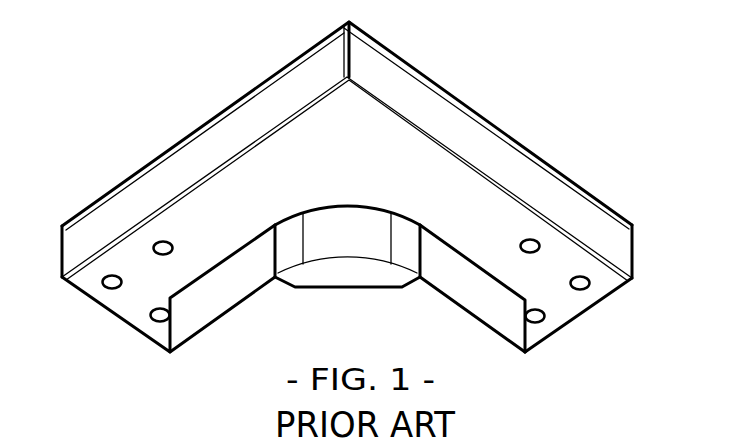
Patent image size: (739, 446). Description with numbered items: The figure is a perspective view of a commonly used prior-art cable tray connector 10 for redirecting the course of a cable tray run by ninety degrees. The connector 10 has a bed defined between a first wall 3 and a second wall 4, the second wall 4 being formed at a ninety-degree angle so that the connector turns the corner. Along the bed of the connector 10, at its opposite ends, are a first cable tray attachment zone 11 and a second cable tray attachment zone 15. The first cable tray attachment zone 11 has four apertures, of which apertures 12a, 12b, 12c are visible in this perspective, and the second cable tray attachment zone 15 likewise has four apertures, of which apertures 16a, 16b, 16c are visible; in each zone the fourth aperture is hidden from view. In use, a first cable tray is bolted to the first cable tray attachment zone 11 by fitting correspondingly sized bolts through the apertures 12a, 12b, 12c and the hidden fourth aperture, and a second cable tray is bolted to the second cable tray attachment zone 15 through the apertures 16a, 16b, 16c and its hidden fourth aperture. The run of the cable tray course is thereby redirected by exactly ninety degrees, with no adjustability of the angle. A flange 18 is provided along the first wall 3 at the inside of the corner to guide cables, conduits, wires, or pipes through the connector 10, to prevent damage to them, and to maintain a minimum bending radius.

The cable tray connector 10 is at (170, 123).
The second wall 4 is at (508, 160).
The first wall 3 is at (492, 305).
The first cable tray attachment zone 11 is at (120, 307).
The second cable tray attachment zone 15 is at (567, 305).
The flange 18 is at (343, 238).
The aperture 12a is at (108, 286).
The aperture 12b is at (168, 242).
The aperture 12c is at (156, 320).
The aperture 16a is at (587, 286).
The aperture 16b is at (525, 242).
The aperture 16c is at (541, 319).